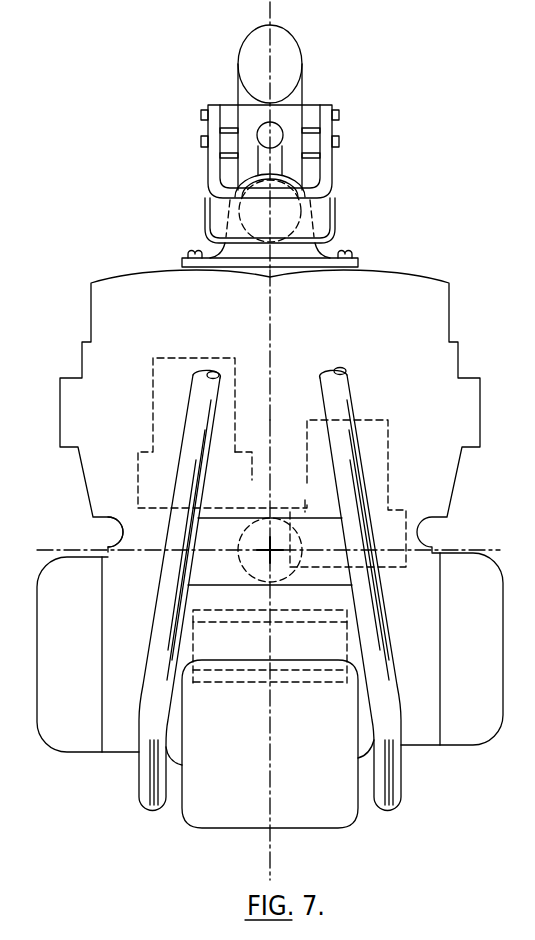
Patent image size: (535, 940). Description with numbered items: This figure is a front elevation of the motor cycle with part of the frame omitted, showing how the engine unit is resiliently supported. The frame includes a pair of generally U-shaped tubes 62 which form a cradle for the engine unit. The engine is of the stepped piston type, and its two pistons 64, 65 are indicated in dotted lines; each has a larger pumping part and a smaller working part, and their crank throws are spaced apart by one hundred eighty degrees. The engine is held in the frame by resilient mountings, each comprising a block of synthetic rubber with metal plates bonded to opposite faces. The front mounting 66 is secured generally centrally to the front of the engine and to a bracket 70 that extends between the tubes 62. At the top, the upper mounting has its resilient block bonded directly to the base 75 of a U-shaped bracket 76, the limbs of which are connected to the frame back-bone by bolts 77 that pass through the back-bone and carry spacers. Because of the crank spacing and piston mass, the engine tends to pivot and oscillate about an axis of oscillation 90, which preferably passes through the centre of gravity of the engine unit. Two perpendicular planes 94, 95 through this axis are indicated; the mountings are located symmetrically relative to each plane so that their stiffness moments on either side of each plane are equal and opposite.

The U-shaped tubes 62 is at (156, 622).
The piston 64 is at (150, 392).
The piston 65 is at (390, 447).
The resilient mounting 66 is at (298, 496).
The bracket 70 is at (346, 537).
The base 75 is at (303, 200).
The U-shaped bracket 76 is at (326, 177).
The bolts 77 is at (341, 112).
The axis of oscillation 90 is at (266, 541).
The plane 94 is at (270, 375).
The plane 95 is at (152, 533).